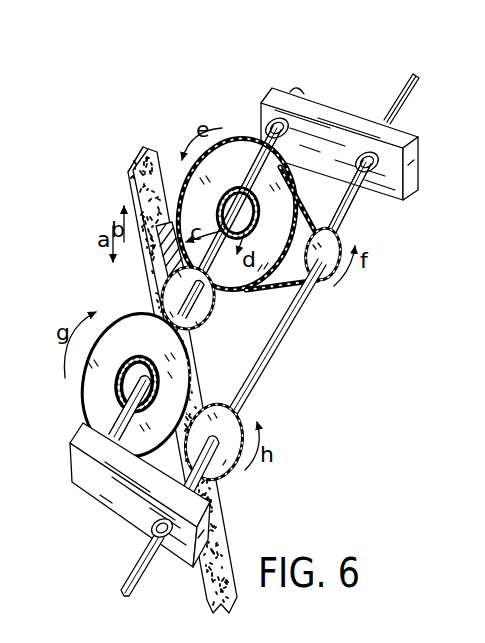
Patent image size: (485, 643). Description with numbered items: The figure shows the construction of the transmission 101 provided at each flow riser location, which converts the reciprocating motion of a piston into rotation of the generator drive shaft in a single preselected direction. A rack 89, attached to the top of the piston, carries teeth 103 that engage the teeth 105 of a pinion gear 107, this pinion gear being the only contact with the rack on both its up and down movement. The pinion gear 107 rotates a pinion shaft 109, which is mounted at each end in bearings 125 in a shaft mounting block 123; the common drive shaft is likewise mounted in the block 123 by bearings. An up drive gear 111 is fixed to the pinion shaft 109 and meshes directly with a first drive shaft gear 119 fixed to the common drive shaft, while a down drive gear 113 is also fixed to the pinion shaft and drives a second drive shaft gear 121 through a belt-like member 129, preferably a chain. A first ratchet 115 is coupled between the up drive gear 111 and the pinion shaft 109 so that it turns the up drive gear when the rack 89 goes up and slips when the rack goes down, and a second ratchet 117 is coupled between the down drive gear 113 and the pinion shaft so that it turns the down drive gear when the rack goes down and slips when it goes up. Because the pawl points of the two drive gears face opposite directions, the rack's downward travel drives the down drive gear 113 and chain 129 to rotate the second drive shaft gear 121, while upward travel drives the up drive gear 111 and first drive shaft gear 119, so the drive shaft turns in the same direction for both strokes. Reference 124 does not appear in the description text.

The rack 89 is at (183, 132).
The transmission 101 is at (84, 270).
The teeth 103 is at (152, 258).
The teeth 105 is at (216, 305).
The pinion gear 107 is at (204, 320).
The pinion shaft 109 is at (90, 415).
The up drive gear 111 is at (78, 390).
The down drive gear 113 is at (228, 140).
The first ratchet 115 is at (128, 345).
The second ratchet 117 is at (244, 170).
The first drive shaft gear 119 is at (232, 472).
The second drive shaft gear 121 is at (332, 278).
The shaft mounting block 123 is at (330, 112).
The support block 124 is at (115, 502).
The bearings 125 is at (280, 88).
The belt-like member 129 is at (338, 208).